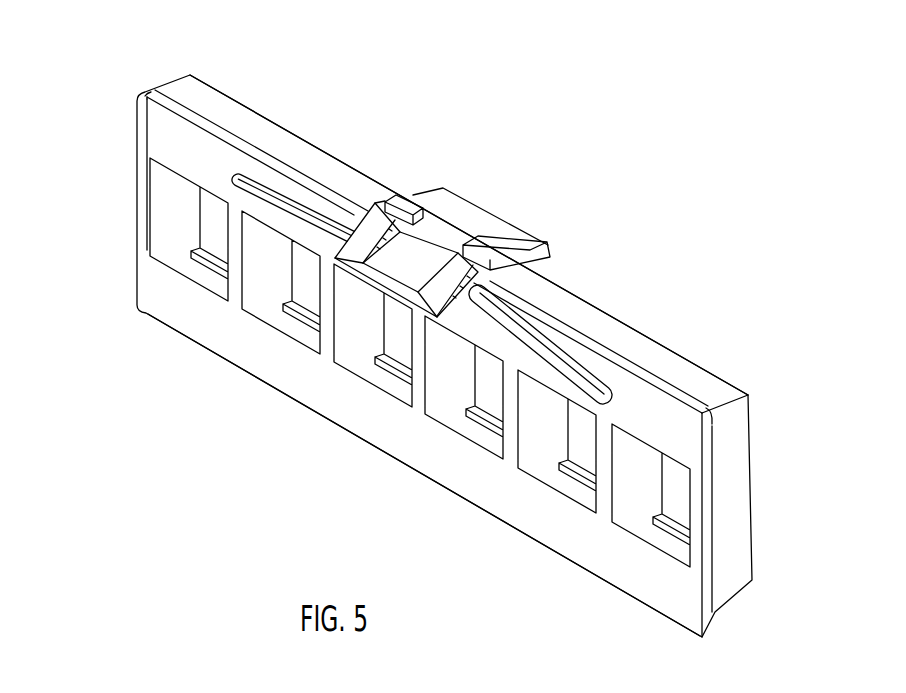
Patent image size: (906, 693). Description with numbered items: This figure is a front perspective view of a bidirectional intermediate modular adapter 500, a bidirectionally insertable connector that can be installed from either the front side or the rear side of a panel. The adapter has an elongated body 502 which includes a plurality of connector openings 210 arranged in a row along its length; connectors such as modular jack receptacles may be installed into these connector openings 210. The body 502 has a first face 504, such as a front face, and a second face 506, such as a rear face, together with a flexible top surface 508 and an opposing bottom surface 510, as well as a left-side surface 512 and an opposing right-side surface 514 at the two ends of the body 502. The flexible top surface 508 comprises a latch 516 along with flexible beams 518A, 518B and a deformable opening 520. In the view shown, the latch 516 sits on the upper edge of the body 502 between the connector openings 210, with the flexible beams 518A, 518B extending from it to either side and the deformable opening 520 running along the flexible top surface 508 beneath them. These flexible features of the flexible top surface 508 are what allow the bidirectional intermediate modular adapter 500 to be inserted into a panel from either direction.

The bidirectional intermediate modular adapter 500 is at (163, 450).
The body 502 is at (385, 423).
The first face 504 is at (165, 307).
The second face 506 is at (278, 106).
The flexible top surface 508 is at (688, 380).
The bottom surface 510 is at (616, 600).
The left-side surface 512 is at (132, 204).
The right-side surface 514 is at (733, 523).
The latch 516 is at (505, 212).
The flexible beam 518A is at (362, 194).
The flexible beam 518B is at (553, 297).
The deformable opening 520 is at (485, 305).
The connector openings 210 is at (307, 290).